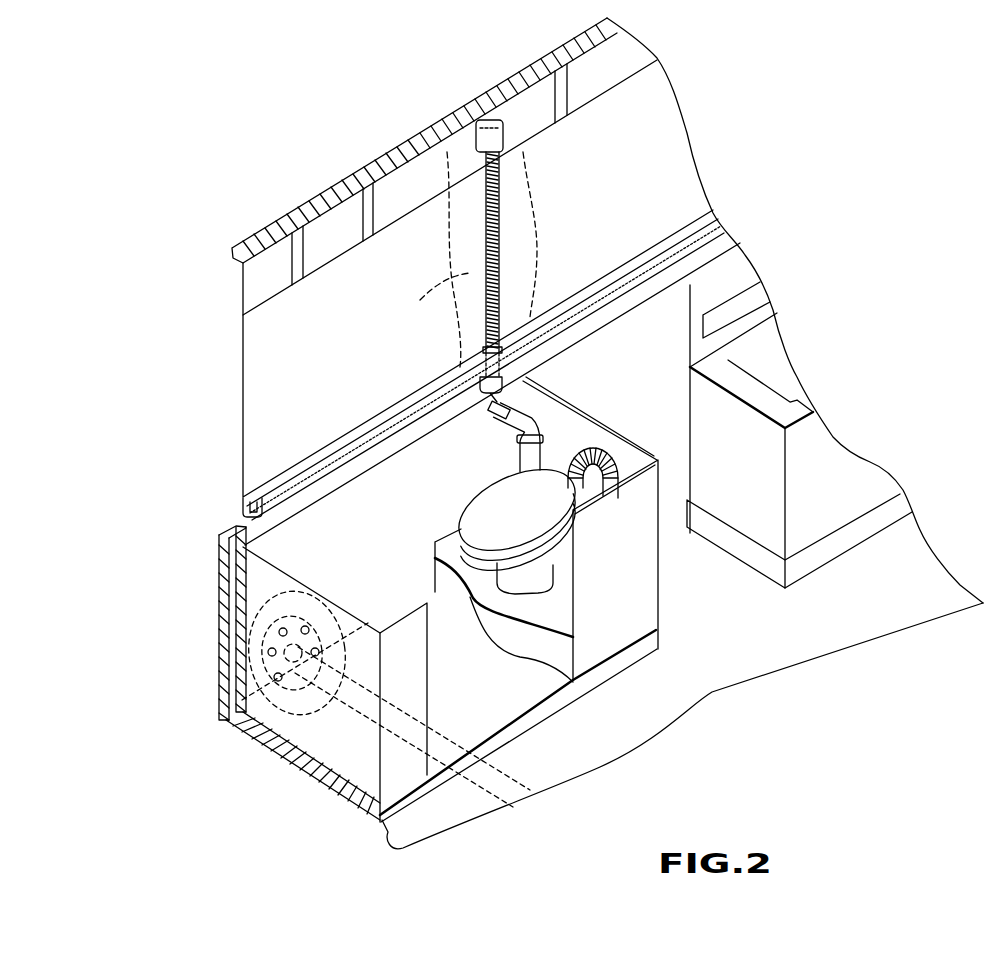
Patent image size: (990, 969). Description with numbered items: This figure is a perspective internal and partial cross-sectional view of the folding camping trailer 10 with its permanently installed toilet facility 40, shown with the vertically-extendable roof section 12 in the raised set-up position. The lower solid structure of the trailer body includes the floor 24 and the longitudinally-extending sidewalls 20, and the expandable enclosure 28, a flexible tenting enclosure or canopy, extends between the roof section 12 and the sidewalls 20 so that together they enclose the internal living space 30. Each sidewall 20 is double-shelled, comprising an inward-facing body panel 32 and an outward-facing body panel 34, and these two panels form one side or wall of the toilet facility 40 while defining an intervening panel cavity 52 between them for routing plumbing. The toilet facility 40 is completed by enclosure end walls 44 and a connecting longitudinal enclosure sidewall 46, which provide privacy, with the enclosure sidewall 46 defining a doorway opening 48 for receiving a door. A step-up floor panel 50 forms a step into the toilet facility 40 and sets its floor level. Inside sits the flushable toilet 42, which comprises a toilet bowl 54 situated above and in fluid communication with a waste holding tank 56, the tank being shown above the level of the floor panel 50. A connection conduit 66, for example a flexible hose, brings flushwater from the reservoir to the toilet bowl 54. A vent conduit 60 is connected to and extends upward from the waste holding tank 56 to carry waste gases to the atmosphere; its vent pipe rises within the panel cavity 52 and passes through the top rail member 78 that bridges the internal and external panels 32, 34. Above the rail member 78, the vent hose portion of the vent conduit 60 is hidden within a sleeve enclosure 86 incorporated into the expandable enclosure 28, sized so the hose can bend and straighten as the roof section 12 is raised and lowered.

The folding camping trailer 10 is at (203, 170).
The vertically-extendable roof section 12 is at (390, 176).
The sidewalls 20 is at (200, 582).
The floor 24 is at (915, 575).
The expandable enclosure 28 is at (672, 162).
The internal living space 30 is at (692, 571).
The inward-facing body panel 32 is at (252, 575).
The outward-facing body panel 34 is at (218, 557).
The toilet facility 40 is at (668, 497).
The flushable toilet 42 is at (447, 497).
The enclosure end walls 44 is at (333, 743).
The longitudinal enclosure sidewall 46 is at (635, 598).
The doorway opening 48 is at (430, 682).
The step-up floor panel 50 is at (618, 660).
The intervening panel cavity 52 is at (220, 625).
The toilet bowl 54 is at (575, 565).
The waste holding tank 56 is at (500, 633).
The vent conduit 60 is at (500, 258).
The connection conduit 66 is at (650, 457).
The top rail member 78 is at (417, 430).
The sleeve enclosure 86 is at (465, 259).